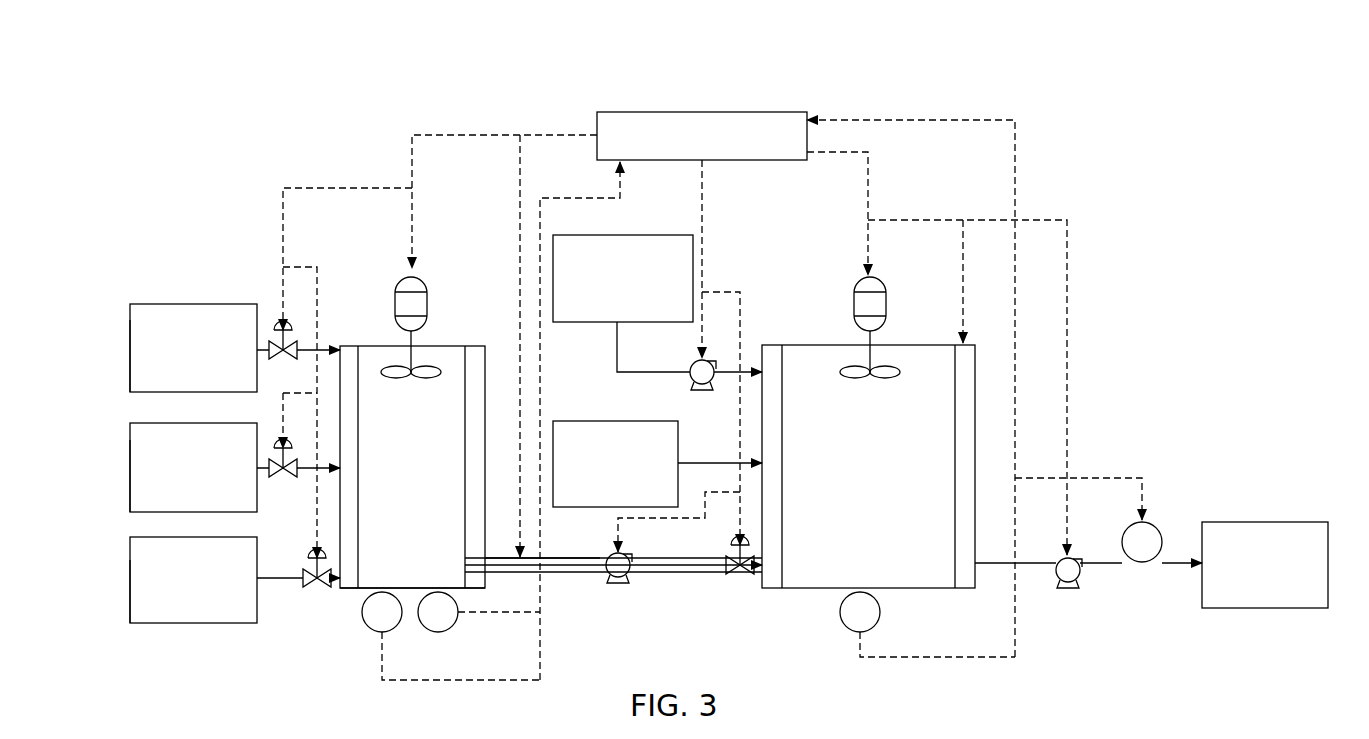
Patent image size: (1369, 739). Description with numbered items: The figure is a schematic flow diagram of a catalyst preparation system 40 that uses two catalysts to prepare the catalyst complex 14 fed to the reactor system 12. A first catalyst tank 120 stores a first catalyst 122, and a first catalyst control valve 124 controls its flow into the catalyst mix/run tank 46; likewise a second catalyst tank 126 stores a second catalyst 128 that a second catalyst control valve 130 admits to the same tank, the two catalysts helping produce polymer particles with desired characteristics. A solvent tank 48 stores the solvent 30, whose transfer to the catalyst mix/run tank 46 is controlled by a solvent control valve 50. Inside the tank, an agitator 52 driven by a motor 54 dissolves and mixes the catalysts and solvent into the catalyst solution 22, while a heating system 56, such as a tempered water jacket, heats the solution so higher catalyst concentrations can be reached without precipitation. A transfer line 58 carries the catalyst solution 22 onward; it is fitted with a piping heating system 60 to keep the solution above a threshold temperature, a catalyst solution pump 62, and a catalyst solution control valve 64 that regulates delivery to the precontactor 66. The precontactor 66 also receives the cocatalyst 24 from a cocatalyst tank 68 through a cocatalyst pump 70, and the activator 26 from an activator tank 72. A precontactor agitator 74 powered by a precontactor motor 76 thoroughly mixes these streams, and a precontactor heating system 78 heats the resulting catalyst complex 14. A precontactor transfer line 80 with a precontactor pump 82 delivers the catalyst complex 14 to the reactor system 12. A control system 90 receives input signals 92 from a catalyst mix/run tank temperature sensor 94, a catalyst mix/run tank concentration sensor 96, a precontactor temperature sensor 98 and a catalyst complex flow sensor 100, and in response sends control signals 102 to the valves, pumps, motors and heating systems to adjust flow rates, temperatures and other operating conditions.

The reactor system 12 is at (1268, 522).
The catalyst complex 14 is at (780, 597).
The catalyst solution 22 is at (350, 598).
The cocatalyst 24 is at (606, 322).
The activator 26 is at (606, 507).
The solvent 30 is at (130, 560).
The catalyst preparation system 40 is at (878, 55).
The catalyst mix/run tank 46 is at (442, 346).
The solvent tank 48 is at (137, 588).
The solvent control valve 50 is at (308, 550).
The agitator 52 is at (398, 380).
The motor 54 is at (396, 280).
The heating system 56 is at (350, 346).
The transfer line 58 is at (650, 575).
The piping heating system 60 is at (587, 576).
The catalyst solution pump 62 is at (616, 586).
The catalyst solution control valve 64 is at (728, 548).
The precontactor 66 is at (887, 332).
The cocatalyst tank 68 is at (630, 235).
The cocatalyst pump 70 is at (693, 364).
The activator tank 72 is at (588, 421).
The precontactor agitator 74 is at (855, 380).
The precontactor motor 76 is at (857, 280).
The precontactor heating system 78 is at (768, 345).
The precontactor transfer line 80 is at (1003, 560).
The precontactor pump 82 is at (1074, 588).
The control system 90 is at (700, 112).
The input signals 92 is at (852, 120).
The catalyst mix/run tank temperature sensor 94 is at (455, 628).
The catalyst mix/run tank concentration sensor 96 is at (388, 632).
The precontactor temperature sensor 98 is at (848, 626).
The catalyst complex flow sensor 100 is at (1156, 528).
The control signals 102 is at (562, 133).
The first catalyst tank 120 is at (130, 334).
The first catalyst 122 is at (137, 362).
The first catalyst control valve 124 is at (276, 320).
The second catalyst tank 126 is at (130, 450).
The second catalyst 128 is at (137, 476).
The second catalyst control valve 130 is at (278, 428).